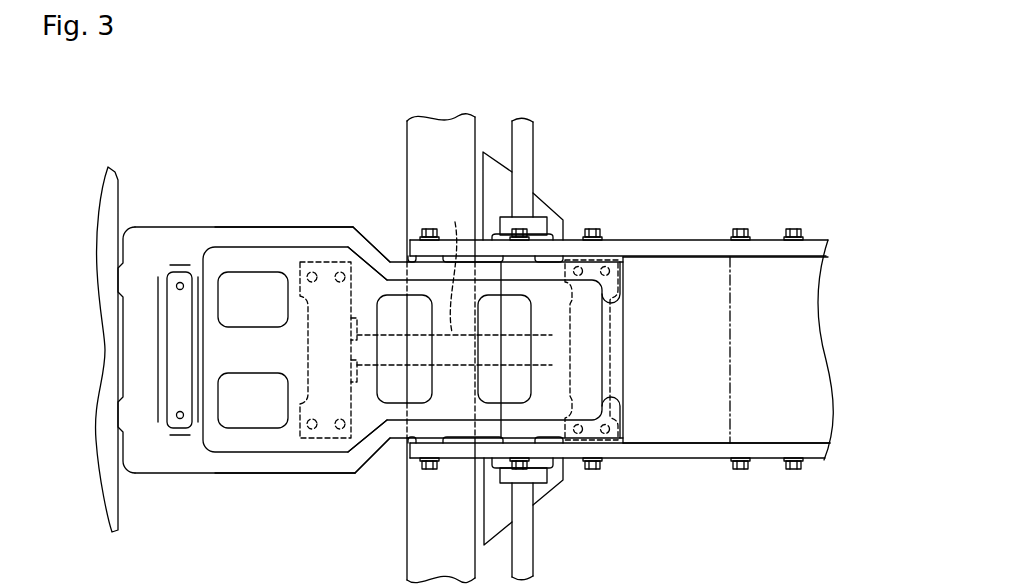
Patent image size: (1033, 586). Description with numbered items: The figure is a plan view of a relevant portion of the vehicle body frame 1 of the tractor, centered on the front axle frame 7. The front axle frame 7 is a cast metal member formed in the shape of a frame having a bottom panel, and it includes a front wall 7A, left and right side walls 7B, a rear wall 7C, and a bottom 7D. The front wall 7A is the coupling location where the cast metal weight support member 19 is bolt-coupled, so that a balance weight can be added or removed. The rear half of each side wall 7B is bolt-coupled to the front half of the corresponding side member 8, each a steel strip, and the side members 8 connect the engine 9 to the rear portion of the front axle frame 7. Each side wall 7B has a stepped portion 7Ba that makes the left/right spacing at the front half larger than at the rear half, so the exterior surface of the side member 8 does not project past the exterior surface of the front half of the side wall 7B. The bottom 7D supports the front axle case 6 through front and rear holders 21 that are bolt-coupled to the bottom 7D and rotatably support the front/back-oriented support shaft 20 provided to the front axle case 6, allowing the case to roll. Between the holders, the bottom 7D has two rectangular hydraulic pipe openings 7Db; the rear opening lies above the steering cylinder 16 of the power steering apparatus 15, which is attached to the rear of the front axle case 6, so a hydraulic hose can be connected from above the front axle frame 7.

The vehicle body frame 1 is at (767, 237).
The front axle case 6 is at (407, 136).
The front axle frame 7 is at (210, 227).
The front wall 7A is at (143, 432).
The side wall 7B is at (282, 238).
The stepped portion 7Ba is at (388, 242).
The rear wall 7C is at (623, 358).
The bottom 7D is at (323, 262).
The hydraulic pipe opening 7Db is at (512, 295).
The side member 8 is at (678, 243).
The engine 9 is at (728, 372).
The power steering apparatus 15 is at (537, 172).
The steering cylinder 16 is at (542, 473).
The weight support member 19 is at (112, 208).
The support shaft 20 is at (452, 265).
The holder 21 is at (310, 346).